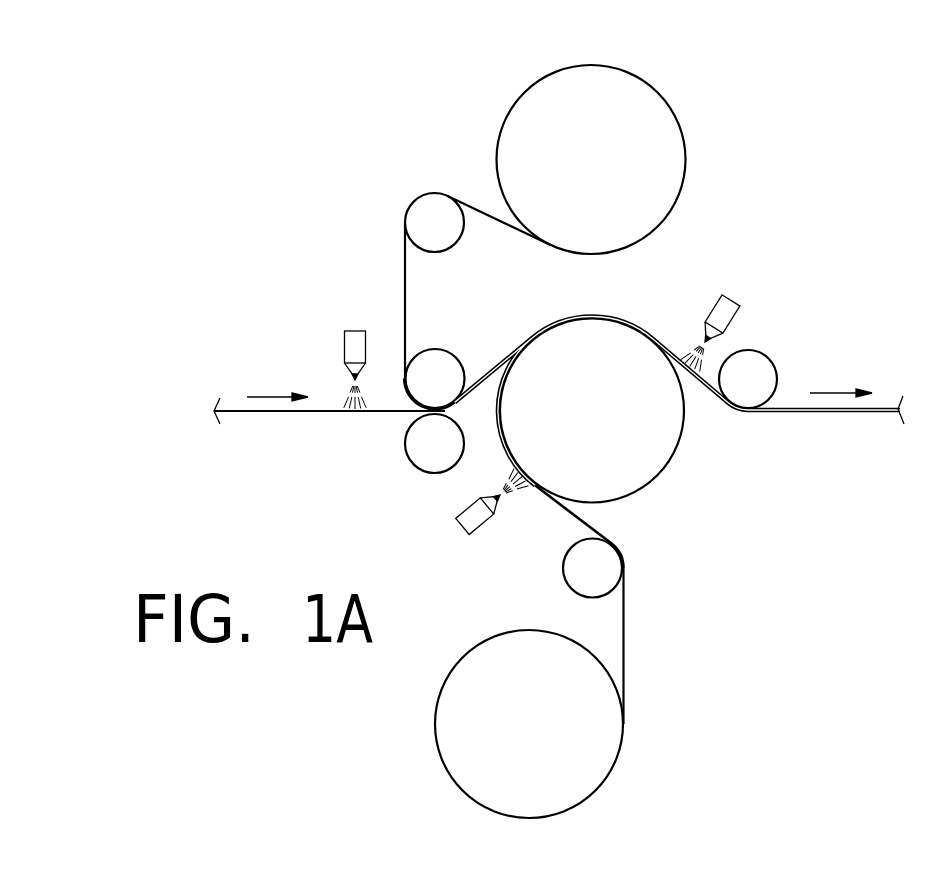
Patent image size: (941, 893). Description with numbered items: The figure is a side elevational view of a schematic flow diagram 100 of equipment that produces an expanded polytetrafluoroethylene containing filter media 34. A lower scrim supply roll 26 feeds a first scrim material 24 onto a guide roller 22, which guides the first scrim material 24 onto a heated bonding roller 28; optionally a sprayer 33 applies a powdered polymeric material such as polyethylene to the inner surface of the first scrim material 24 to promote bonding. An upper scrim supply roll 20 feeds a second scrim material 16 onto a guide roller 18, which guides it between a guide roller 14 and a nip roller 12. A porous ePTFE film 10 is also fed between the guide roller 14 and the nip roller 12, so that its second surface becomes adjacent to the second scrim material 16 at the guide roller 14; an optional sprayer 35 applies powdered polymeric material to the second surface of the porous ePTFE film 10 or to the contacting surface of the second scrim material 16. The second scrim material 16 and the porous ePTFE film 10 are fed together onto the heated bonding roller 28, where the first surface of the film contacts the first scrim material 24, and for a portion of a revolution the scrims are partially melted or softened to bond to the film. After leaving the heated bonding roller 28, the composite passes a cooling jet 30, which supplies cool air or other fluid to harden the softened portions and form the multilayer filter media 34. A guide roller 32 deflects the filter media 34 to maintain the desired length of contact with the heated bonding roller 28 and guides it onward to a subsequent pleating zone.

The schematic flow diagram 100 is at (130, 100).
The porous ePTFE film 10 is at (272, 413).
The nip roller 12 is at (417, 457).
The guide roller 14 is at (432, 360).
The second scrim material 16 is at (404, 262).
The guide roller 18 is at (422, 210).
The upper scrim supply roll 20 is at (548, 100).
The guide roller 22 is at (567, 570).
The first scrim material 24 is at (623, 638).
The lower scrim supply roll 26 is at (445, 720).
The heated bonding roller 28 is at (545, 358).
The cooling jet 30 is at (730, 298).
The guide roller 32 is at (757, 368).
The sprayer 33 is at (466, 527).
The filter media 34 is at (855, 413).
The sprayer 35 is at (350, 345).